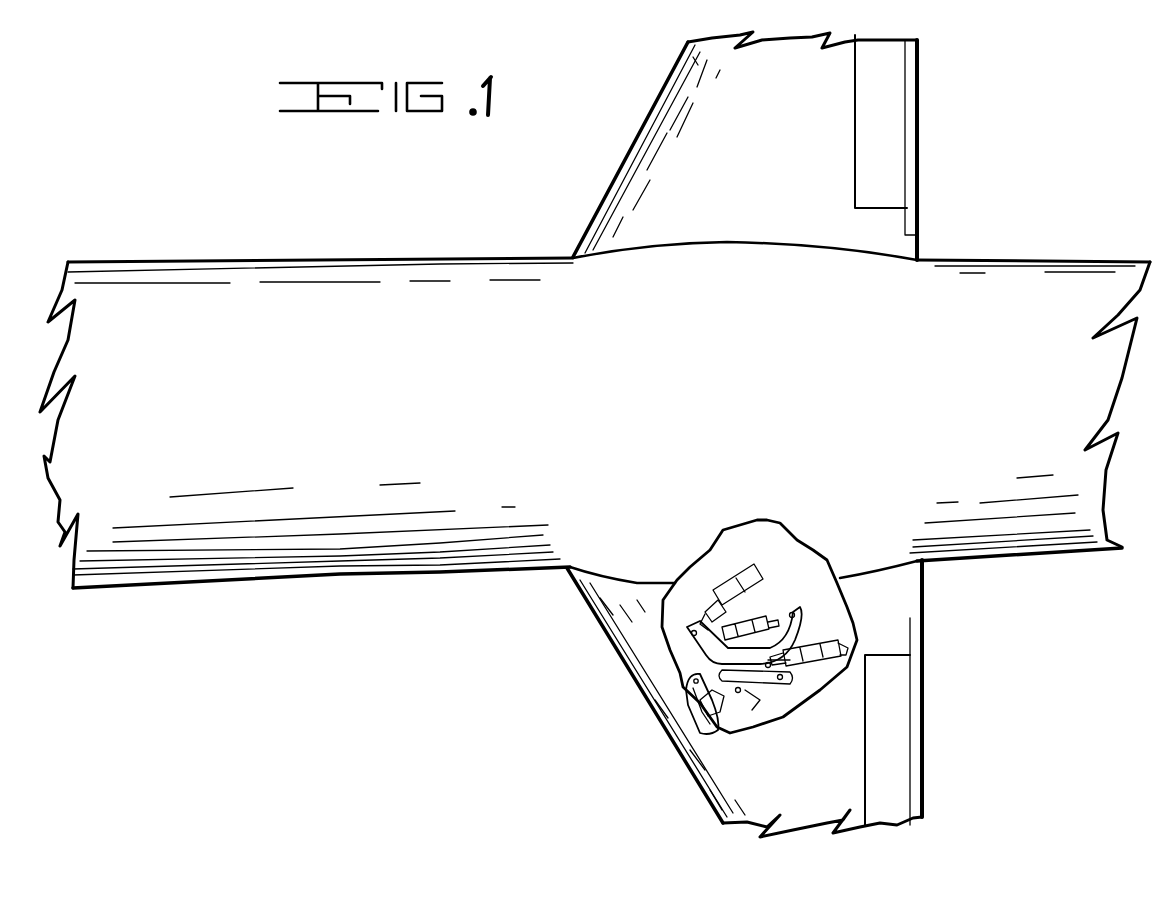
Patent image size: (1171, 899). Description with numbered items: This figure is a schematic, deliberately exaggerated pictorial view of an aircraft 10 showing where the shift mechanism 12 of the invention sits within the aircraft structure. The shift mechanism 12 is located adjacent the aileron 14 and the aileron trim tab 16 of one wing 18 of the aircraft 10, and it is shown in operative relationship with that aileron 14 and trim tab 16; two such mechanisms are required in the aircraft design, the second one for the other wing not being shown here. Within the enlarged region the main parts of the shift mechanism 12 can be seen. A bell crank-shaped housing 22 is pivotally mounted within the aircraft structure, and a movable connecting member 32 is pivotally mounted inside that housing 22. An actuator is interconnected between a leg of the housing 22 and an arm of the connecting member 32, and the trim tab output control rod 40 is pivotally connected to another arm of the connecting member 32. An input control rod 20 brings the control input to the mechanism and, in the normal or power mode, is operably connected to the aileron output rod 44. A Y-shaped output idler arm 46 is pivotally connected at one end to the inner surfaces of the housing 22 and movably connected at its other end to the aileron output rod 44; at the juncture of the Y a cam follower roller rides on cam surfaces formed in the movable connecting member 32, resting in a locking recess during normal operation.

The aircraft 10 is at (412, 553).
The shift mechanism 12 is at (781, 586).
The aileron 14 is at (880, 138).
The aileron trim tab 16 is at (915, 163).
The wing 18 is at (821, 766).
The input control rod 20 is at (641, 216).
The bell crank-shaped housing 22 is at (795, 624).
The movable connecting member 32 is at (740, 672).
The trim tab output control rod 40 is at (848, 610).
The aileron output rod 44 is at (700, 706).
The Y-shaped output idler arm 46 is at (720, 726).